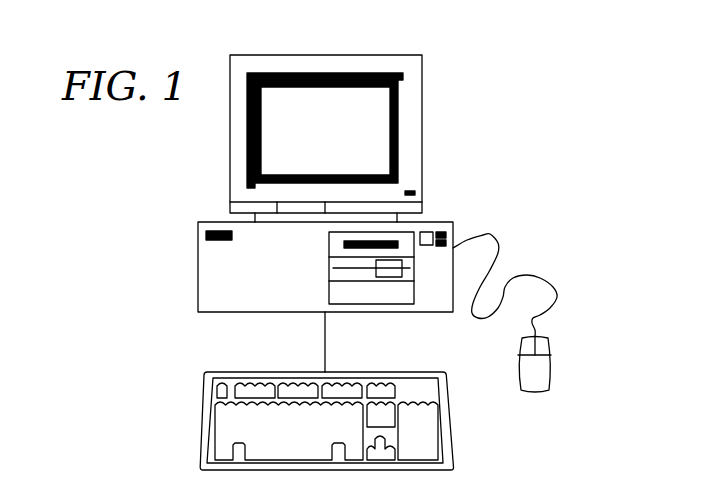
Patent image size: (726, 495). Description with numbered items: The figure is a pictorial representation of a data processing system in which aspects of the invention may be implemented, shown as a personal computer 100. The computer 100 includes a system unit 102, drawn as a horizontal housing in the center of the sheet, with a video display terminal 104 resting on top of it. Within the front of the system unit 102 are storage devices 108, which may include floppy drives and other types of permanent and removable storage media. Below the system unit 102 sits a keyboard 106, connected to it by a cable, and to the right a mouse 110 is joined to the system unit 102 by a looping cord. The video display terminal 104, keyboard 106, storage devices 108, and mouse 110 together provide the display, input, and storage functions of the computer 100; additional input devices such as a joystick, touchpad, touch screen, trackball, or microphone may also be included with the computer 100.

The computer 100 is at (526, 181).
The system unit 102 is at (325, 288).
The video display terminal 104 is at (422, 108).
The keyboard 106 is at (200, 421).
The storage devices 108 is at (329, 265).
The mouse 110 is at (550, 355).